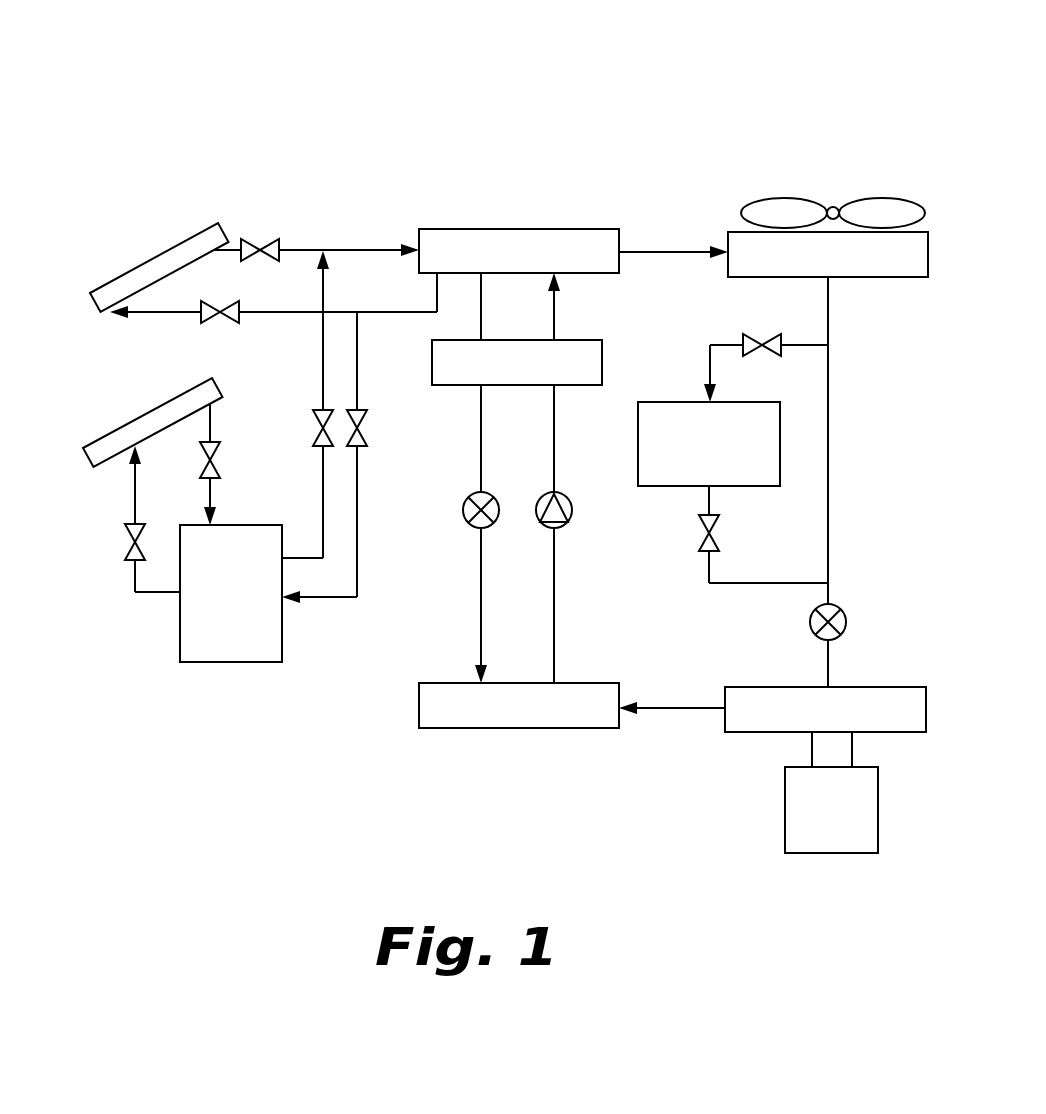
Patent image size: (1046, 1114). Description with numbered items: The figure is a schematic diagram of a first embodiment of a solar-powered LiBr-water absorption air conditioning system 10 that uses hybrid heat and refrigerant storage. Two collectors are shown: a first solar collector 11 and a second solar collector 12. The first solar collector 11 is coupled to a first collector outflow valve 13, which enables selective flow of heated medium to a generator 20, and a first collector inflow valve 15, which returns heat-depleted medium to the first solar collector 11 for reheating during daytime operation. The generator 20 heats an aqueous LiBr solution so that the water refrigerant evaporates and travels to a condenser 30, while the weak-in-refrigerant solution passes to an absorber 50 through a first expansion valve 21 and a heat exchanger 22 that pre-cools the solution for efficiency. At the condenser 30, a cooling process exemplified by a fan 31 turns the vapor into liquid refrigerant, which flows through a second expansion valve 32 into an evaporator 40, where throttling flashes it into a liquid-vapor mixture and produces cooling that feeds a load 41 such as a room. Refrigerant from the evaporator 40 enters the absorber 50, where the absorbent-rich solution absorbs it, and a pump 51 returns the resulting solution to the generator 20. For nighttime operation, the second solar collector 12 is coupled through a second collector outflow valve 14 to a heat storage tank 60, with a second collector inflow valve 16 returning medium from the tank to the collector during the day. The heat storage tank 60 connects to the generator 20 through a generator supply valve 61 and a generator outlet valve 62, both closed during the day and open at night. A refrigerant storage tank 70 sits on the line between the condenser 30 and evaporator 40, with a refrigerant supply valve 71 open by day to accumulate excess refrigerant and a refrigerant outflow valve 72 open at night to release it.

The solar-powered LiBr-water absorption air conditioning system 10 is at (426, 73).
The first solar collector 11 is at (145, 263).
The second solar collector 12 is at (125, 425).
The first collector outflow valve 13 is at (261, 239).
The second collector outflow valve 14 is at (218, 460).
The first collector inflow valve 15 is at (223, 318).
The second collector inflow valve 16 is at (128, 550).
The generator 20 is at (543, 229).
The first expansion valve 21 is at (466, 519).
The heat exchanger 22 is at (602, 362).
The condenser 30 is at (883, 277).
The fan 31 is at (868, 200).
The second expansion valve 32 is at (838, 607).
The evaporator 40 is at (892, 687).
The load 41 is at (787, 800).
The absorber 50 is at (497, 728).
The pump 51 is at (568, 498).
The heat storage tank 60 is at (213, 663).
The generator supply valve 61 is at (316, 430).
The generator outlet valve 62 is at (365, 435).
The refrigerant storage tank 70 is at (650, 486).
The refrigerant supply valve 71 is at (745, 337).
The refrigerant outflow valve 72 is at (718, 540).